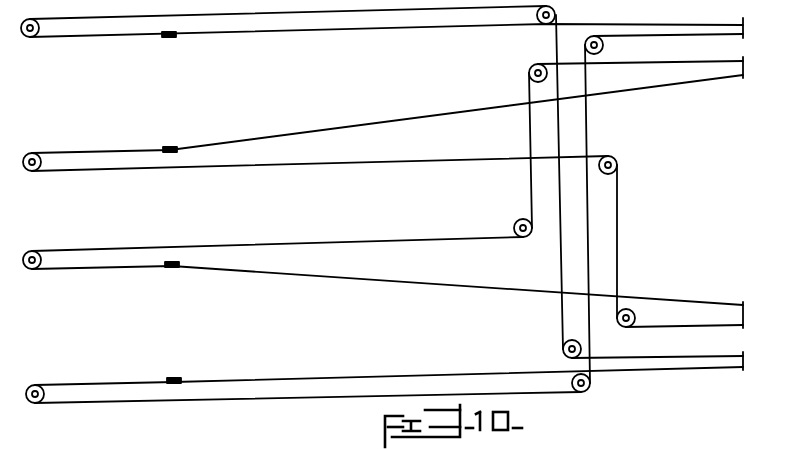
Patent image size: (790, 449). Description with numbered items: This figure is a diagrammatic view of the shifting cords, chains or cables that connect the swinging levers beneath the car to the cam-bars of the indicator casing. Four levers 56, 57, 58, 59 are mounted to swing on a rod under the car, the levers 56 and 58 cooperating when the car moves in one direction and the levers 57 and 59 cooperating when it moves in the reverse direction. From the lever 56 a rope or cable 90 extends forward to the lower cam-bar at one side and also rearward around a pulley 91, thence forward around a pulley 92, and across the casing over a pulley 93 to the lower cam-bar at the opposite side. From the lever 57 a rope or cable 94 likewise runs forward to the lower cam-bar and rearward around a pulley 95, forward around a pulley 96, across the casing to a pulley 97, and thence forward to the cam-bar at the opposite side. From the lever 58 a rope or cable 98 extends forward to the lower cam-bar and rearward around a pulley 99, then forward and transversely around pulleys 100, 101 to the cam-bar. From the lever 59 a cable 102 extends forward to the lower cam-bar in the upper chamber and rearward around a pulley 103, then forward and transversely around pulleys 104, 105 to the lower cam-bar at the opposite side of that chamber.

The lever 56 is at (178, 379).
The lever 57 is at (172, 268).
The lever 58 is at (172, 146).
The lever 59 is at (170, 38).
The rope or cable 90 is at (296, 378).
The pulley 91 is at (33, 403).
The pulley 92 is at (591, 383).
The pulley 93 is at (604, 45).
The rope or cable 94 is at (352, 279).
The pulley 95 is at (36, 268).
The pulley 96 is at (514, 226).
The pulley 97 is at (528, 73).
The rope or cable 98 is at (248, 144).
The pulley 99 is at (32, 171).
The pulley 100 is at (618, 165).
The pulley 101 is at (636, 318).
The cable 102 is at (242, 33).
The pulley 103 is at (36, 35).
The pulley 104 is at (556, 15).
The pulley 105 is at (562, 349).